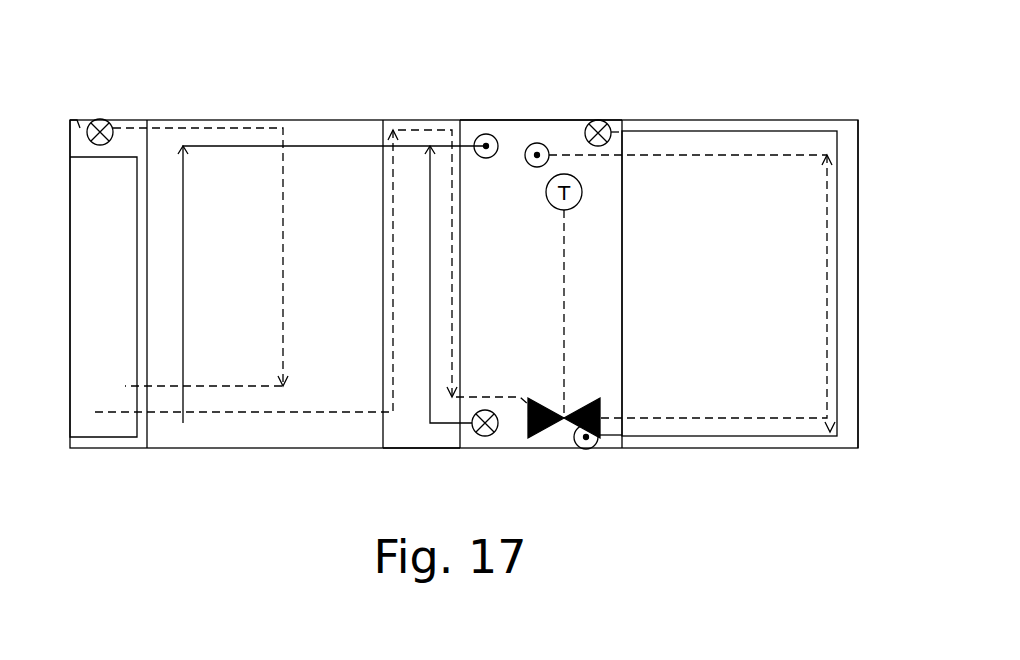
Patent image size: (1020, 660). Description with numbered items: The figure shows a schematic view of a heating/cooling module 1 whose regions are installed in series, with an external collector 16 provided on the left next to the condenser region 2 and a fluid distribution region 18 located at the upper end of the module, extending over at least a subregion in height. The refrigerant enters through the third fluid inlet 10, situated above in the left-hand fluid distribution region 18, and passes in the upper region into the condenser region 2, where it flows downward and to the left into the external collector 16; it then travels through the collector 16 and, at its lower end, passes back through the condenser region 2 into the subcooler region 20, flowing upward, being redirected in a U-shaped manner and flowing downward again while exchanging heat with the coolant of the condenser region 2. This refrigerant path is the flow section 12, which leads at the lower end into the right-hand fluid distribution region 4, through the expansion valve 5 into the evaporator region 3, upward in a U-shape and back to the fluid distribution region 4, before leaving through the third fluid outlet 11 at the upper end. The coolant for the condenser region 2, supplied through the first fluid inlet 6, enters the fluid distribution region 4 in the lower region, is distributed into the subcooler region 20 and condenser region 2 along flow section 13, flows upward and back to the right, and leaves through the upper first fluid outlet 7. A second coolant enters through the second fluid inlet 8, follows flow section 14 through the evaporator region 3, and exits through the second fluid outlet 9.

The heating/cooling module 1 is at (422, 95).
The condenser region 2 is at (222, 120).
The evaporator region 3 is at (787, 120).
The fluid distribution region 4 is at (577, 120).
The expansion valve 5 is at (547, 438).
The first fluid inlet 6 is at (485, 436).
The first fluid outlet 7 is at (487, 133).
The second fluid inlet 8 is at (604, 122).
The second fluid outlet 9 is at (586, 449).
The third fluid inlet 10 is at (103, 119).
The third fluid outlet 11 is at (538, 142).
The flow section 12 is at (284, 162).
The flow section 13 is at (202, 423).
The flow section 14 is at (838, 272).
The external collector 16 is at (88, 247).
The fluid distribution region 18 is at (78, 127).
The subcooler region 20 is at (393, 448).